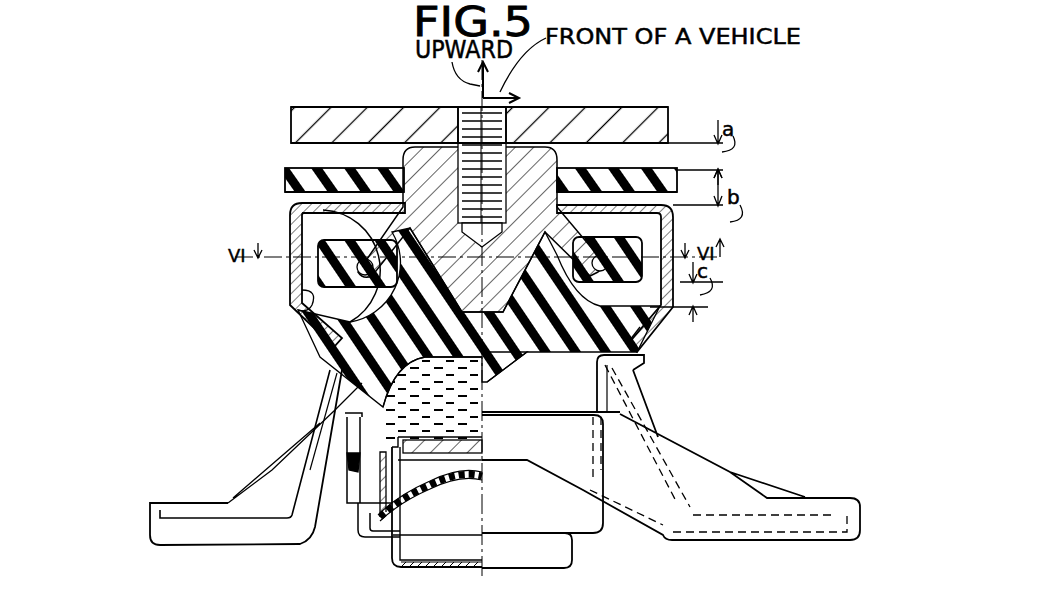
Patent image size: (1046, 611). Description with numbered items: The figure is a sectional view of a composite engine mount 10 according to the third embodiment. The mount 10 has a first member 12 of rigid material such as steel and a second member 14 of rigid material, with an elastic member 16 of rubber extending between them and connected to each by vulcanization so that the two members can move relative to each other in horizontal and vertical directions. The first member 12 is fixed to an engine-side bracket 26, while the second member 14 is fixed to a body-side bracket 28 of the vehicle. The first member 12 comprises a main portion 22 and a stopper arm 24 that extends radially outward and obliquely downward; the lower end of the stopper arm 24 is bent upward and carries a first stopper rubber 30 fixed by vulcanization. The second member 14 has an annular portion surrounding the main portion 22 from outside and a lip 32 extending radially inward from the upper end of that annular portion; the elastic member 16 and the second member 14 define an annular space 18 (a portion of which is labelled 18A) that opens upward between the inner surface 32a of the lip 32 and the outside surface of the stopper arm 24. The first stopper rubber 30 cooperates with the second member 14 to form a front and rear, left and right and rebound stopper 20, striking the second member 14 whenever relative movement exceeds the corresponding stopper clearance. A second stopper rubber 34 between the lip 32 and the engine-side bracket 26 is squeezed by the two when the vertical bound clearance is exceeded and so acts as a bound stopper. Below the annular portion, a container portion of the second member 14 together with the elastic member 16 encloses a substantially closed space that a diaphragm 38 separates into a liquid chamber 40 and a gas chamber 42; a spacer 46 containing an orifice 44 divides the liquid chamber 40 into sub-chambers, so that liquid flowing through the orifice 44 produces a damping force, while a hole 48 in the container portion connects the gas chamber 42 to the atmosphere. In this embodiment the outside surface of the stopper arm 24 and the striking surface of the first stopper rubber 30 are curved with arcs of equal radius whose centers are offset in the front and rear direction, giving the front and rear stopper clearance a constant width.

The composite engine mount 10 is at (682, 318).
The first member 12 is at (577, 137).
The second member 14 is at (648, 327).
The elastic member 16 is at (363, 333).
The space 18 is at (317, 293).
The rubber cover 18A is at (300, 308).
The stopper 20 is at (625, 345).
The main portion 22 is at (518, 165).
The stopper arm 24 is at (680, 103).
The engine-side bracket 26 is at (619, 115).
The body-side bracket 28 is at (718, 467).
The first stopper rubber 30 is at (347, 240).
The lip 32 is at (300, 180).
The inner surface of lip 32a is at (372, 178).
The second stopper rubber 34 is at (297, 170).
The diaphragm 38 is at (393, 533).
The liquid chamber 40 is at (358, 407).
The gas chamber 42 is at (443, 540).
The orifice 44 is at (400, 477).
The spacer 46 is at (397, 455).
The hole 48 is at (427, 573).